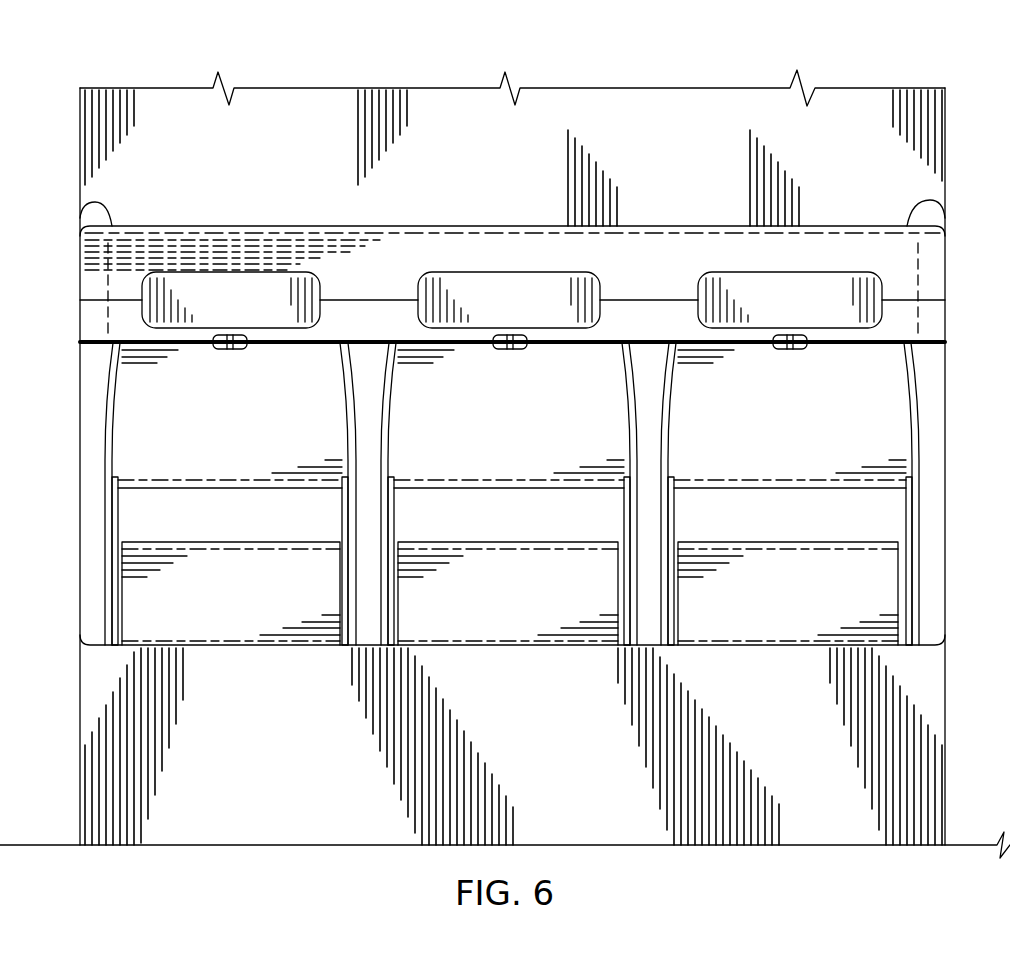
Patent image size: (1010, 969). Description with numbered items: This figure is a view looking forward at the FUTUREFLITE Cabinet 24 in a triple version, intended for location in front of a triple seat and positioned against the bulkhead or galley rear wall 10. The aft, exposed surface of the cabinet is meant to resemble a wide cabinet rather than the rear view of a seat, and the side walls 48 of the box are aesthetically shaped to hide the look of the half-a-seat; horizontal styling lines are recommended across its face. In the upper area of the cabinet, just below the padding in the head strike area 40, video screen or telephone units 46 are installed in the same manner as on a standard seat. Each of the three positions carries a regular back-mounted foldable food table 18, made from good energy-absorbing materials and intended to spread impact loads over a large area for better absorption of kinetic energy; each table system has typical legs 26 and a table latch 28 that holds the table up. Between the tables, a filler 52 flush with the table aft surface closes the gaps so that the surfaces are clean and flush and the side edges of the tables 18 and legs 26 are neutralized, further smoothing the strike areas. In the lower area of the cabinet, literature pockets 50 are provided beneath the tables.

The bulkhead or galley rear wall 10 is at (244, 111).
The FUTUREFLITE Cabinet 24 is at (387, 226).
The padding in the head strike area 40 is at (227, 250).
The video screen or telephone units 46 is at (500, 272).
The latch, food table 28 is at (790, 349).
The side wall of cabinet 48 is at (92, 438).
The filler flush with table aft surface 52 is at (373, 413).
The seat back mounted foldable food table 18 is at (180, 488).
The legs, food table 26 is at (343, 516).
The literature pocket 50 is at (465, 542).